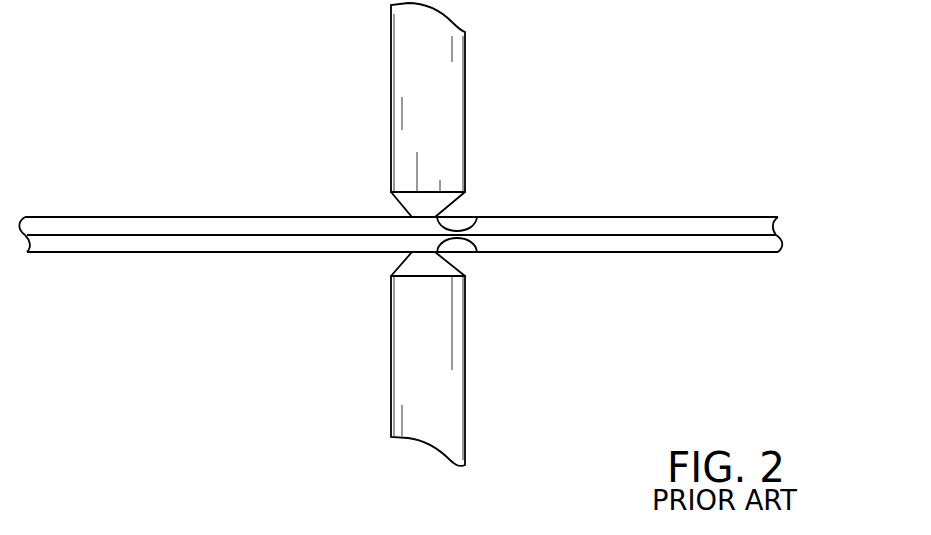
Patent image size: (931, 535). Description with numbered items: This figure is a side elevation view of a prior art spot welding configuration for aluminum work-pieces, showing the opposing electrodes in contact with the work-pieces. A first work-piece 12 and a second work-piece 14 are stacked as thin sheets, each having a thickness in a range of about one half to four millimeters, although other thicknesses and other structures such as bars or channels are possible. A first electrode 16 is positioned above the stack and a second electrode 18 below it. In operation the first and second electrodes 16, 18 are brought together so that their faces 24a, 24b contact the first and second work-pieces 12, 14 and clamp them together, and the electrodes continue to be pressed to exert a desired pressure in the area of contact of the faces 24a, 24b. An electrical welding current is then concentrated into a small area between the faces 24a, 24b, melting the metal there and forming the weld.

The first work-piece 12 is at (132, 217).
The second work-piece 14 is at (218, 252).
The first electrode 16 is at (465, 81).
The second electrode 18 is at (465, 380).
The face 24a is at (476, 217).
The face 24b is at (437, 252).